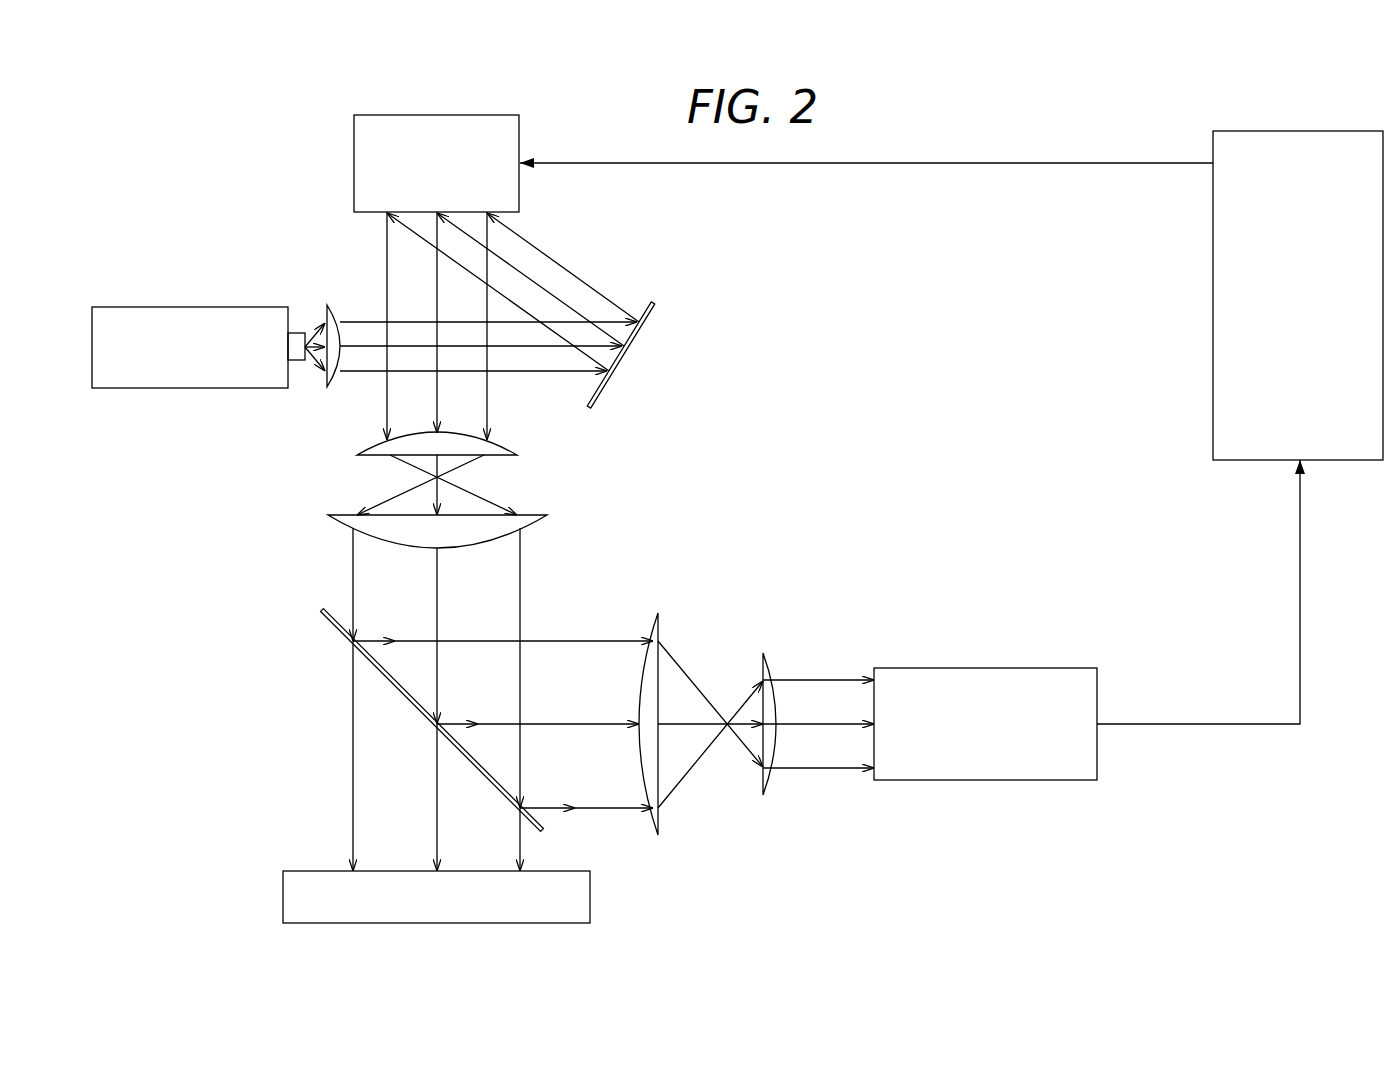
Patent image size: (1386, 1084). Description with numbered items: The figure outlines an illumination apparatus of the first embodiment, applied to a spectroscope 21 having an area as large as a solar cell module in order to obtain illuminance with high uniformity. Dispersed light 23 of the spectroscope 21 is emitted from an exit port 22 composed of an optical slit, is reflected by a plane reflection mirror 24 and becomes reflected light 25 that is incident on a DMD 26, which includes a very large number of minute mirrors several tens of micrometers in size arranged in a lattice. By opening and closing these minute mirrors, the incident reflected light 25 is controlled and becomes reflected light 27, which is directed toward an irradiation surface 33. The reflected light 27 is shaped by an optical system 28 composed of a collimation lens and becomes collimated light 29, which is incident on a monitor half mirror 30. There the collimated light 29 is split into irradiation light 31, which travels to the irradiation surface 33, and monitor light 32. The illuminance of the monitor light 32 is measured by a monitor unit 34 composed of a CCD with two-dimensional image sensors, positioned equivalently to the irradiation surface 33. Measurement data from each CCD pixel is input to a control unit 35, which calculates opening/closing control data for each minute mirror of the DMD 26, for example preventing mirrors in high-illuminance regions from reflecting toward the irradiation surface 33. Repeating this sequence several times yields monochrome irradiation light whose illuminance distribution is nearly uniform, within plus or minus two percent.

The spectroscope 21 is at (230, 307).
The exit port 22 is at (298, 333).
The dispersed light 23 is at (557, 372).
The plane reflection mirror 24 is at (655, 307).
The reflected light 25 is at (587, 283).
The DMD 26 is at (468, 115).
The reflected light 27 is at (385, 242).
The optical system 28 is at (512, 486).
The collimated light 29 is at (521, 579).
The monitor half mirror 30 is at (378, 668).
The irradiation light 31 is at (352, 762).
The monitor light 32 is at (604, 640).
The irradiation surface 33 is at (582, 887).
The monitor unit 34 is at (1023, 668).
The control unit 35 is at (1330, 131).